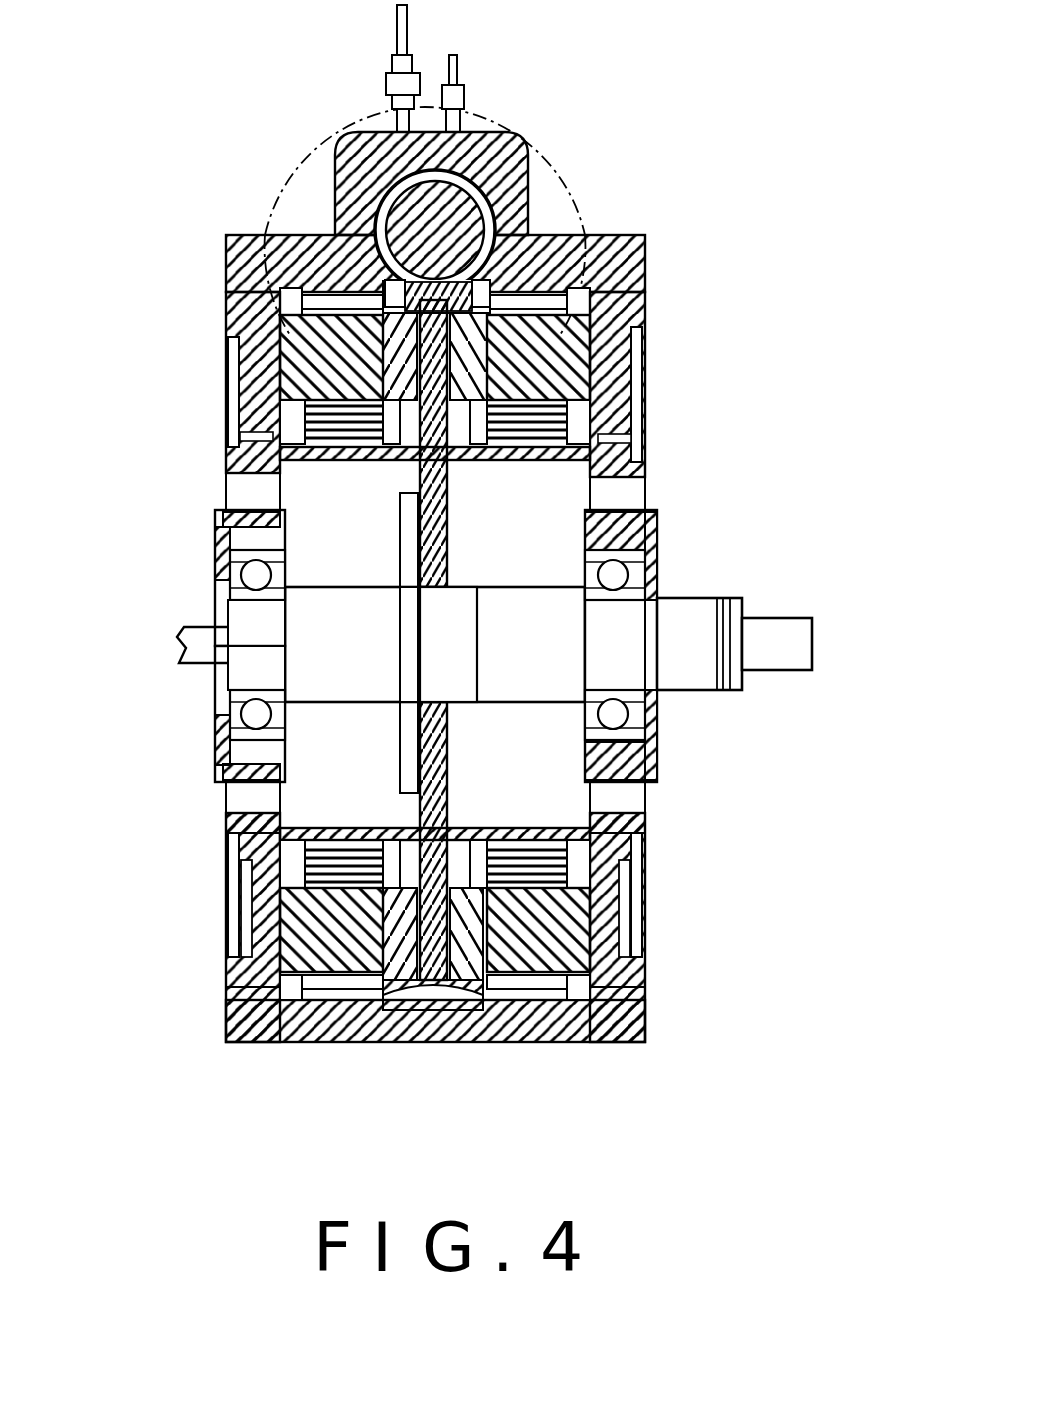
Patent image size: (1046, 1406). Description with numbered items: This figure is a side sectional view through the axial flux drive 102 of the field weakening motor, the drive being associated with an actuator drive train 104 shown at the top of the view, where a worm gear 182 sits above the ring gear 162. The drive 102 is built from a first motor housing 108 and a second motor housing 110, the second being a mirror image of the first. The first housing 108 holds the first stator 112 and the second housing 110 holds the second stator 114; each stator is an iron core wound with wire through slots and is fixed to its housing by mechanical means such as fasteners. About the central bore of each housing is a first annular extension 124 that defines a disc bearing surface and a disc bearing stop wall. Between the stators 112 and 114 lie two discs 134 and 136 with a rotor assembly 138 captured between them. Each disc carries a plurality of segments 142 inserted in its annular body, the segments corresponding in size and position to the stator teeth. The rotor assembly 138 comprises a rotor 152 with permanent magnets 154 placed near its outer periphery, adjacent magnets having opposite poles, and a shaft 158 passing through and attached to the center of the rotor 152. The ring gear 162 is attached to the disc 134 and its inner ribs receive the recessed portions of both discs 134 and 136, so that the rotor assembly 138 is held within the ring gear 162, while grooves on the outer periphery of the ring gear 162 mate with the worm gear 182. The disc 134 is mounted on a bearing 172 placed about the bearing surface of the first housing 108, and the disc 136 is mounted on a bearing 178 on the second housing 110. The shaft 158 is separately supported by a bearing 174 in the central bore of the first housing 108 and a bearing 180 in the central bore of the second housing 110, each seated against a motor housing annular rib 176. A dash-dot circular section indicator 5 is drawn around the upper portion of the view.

The section line 5 is at (590, 182).
The axial flux drive 102 is at (655, 222).
The actuator drive train 104 is at (367, 131).
The first motor housing 108 is at (645, 263).
The second motor housing 110 is at (226, 273).
The first stator 112 is at (575, 918).
The second stator 114 is at (322, 915).
The first annular extension 124 is at (300, 460).
The disc 134 is at (453, 940).
The disc 136 is at (393, 942).
The rotor assembly 138 is at (440, 748).
The segments 142 is at (355, 935).
The rotor 152 is at (407, 470).
The permanent magnets 154 is at (605, 363).
The shaft 158 is at (695, 665).
The ring gear 162 is at (337, 187).
The bearing 172 is at (655, 535).
The bearing 174 is at (480, 860).
The motor housing annular rib 176 is at (216, 702).
The bearing 178 is at (215, 522).
The bearing 180 is at (350, 830).
The worm gear 182 is at (442, 213).